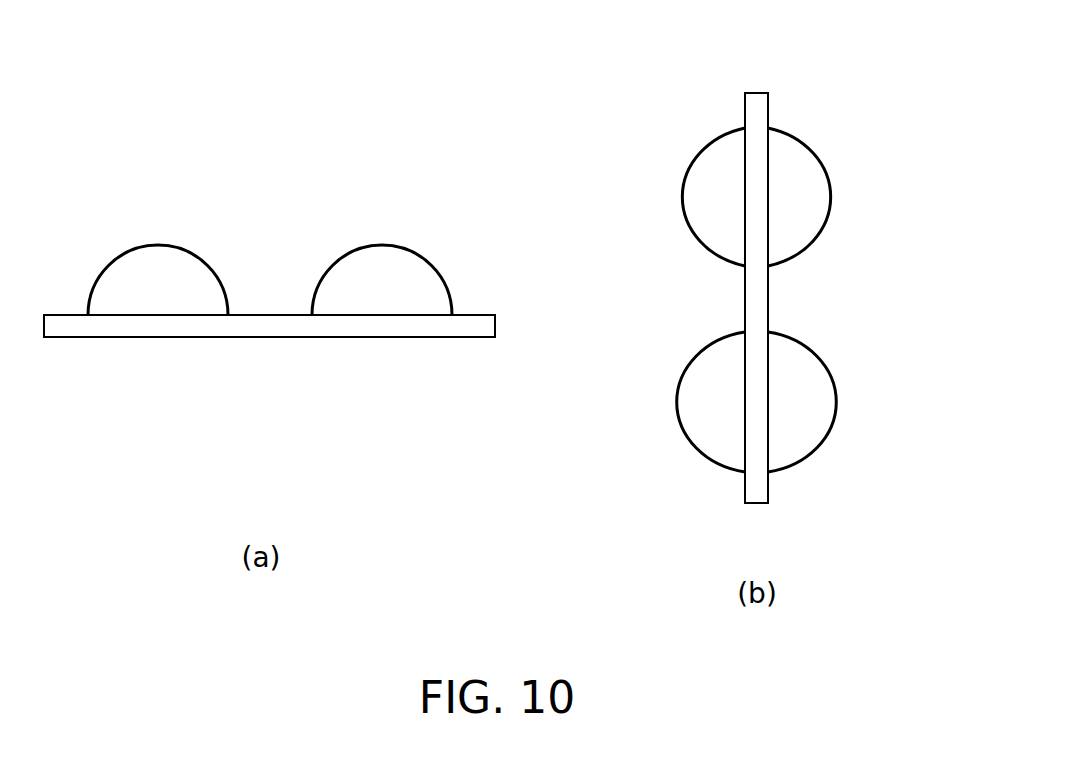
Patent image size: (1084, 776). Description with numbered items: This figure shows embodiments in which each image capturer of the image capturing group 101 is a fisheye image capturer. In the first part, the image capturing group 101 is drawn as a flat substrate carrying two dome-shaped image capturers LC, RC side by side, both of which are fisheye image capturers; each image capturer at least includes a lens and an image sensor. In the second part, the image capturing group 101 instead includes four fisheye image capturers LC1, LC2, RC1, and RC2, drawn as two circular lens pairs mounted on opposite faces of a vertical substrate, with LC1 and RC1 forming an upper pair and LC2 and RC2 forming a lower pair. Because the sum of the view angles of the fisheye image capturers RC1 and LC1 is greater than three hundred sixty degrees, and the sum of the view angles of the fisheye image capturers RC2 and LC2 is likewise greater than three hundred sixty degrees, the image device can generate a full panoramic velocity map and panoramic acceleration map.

The image capturing group 101 is at (270, 338).
The image capturer LC is at (158, 245).
The image capturer RC is at (382, 245).
The fisheye image capturer LC1 is at (675, 196).
The fisheye image capturer RC1 is at (838, 196).
The fisheye image capturer LC2 is at (675, 403).
The fisheye image capturer RC2 is at (838, 403).